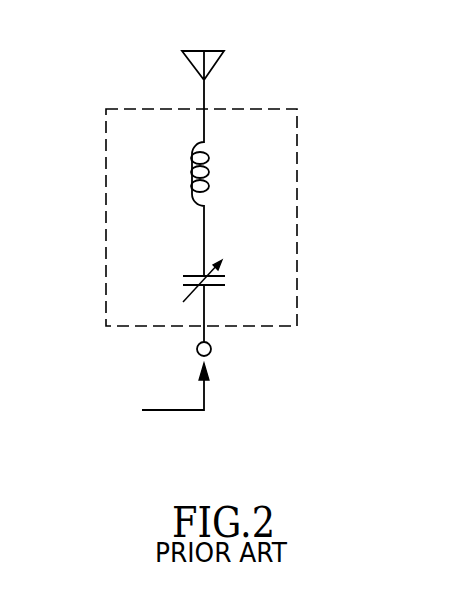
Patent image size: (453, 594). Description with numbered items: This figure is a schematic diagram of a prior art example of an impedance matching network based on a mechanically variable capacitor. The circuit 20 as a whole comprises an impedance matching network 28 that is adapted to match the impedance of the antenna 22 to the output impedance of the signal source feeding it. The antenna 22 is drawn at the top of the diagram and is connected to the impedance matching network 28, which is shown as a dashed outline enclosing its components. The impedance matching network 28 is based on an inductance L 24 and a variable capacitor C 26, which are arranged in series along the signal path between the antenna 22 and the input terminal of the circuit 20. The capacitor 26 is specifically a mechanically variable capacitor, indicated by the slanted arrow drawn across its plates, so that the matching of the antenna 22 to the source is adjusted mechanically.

The circuit 20 is at (248, 255).
The antenna 22 is at (215, 63).
The inductance L 24 is at (210, 167).
The variable capacitor C 26 is at (225, 267).
The impedance matching network 28 is at (297, 200).